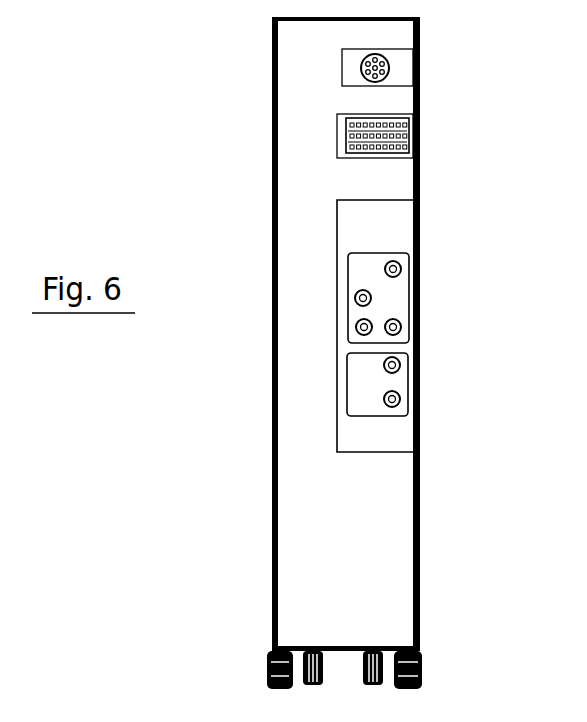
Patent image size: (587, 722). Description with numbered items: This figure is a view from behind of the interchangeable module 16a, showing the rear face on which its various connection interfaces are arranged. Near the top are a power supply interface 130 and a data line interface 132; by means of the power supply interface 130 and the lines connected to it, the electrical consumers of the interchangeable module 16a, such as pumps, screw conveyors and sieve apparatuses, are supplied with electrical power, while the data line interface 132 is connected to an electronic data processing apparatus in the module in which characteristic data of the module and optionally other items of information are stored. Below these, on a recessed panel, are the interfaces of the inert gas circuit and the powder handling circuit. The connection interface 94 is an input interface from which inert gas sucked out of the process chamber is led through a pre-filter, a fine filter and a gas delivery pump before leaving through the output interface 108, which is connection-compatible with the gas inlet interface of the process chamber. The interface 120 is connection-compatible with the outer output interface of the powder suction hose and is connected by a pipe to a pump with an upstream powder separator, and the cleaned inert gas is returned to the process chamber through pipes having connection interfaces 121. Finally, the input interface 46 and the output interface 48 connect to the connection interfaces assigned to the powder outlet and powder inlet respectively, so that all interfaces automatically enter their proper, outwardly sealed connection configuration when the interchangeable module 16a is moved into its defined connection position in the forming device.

The interchangeable module 16a is at (400, 494).
The power supply interface 130 is at (387, 62).
The data line interface 132 is at (413, 126).
The output interface 108 is at (401, 270).
The complementary interface 120 is at (371, 297).
The connection interfaces 121 is at (356, 325).
The connection interface 94 is at (401, 325).
The output interface 48 is at (400, 365).
The input interface 46 is at (400, 400).